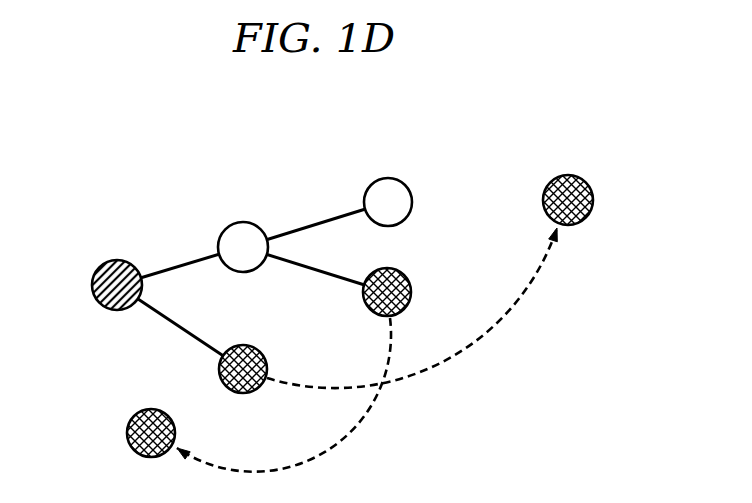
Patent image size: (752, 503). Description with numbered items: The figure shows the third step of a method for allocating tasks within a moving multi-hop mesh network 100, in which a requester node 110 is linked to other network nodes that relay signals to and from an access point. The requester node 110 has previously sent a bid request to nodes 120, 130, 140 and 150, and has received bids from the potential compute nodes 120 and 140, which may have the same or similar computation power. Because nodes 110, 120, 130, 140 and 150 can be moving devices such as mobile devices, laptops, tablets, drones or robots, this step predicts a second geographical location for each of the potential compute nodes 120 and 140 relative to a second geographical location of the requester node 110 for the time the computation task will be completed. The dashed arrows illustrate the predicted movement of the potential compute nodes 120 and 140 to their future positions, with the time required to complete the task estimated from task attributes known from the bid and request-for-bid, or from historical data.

The mesh network 100 is at (328, 91).
The requester node 110 is at (116, 259).
The potential compute node 120 is at (218, 369).
The network node 130 is at (243, 221).
The potential compute node 140 is at (412, 292).
The network node 150 is at (389, 177).